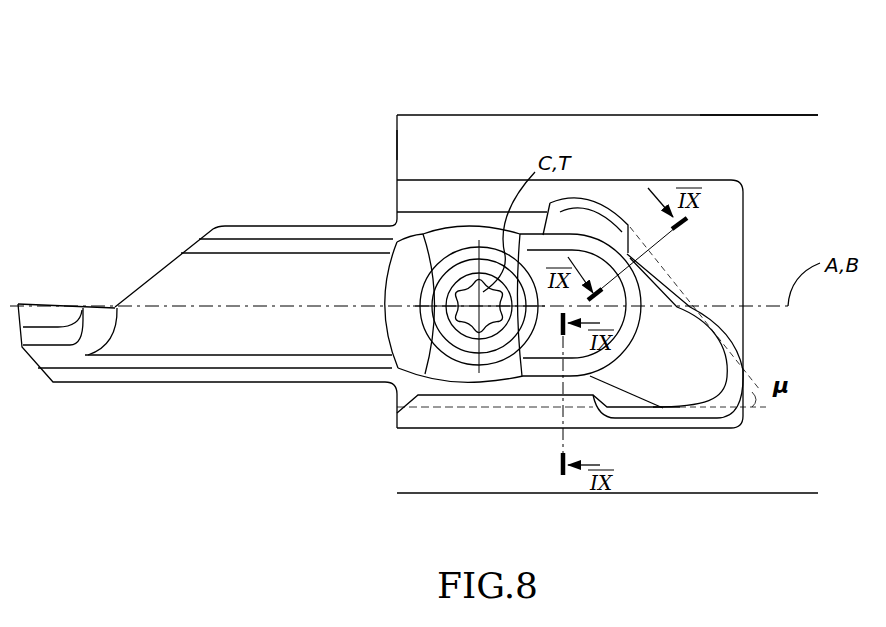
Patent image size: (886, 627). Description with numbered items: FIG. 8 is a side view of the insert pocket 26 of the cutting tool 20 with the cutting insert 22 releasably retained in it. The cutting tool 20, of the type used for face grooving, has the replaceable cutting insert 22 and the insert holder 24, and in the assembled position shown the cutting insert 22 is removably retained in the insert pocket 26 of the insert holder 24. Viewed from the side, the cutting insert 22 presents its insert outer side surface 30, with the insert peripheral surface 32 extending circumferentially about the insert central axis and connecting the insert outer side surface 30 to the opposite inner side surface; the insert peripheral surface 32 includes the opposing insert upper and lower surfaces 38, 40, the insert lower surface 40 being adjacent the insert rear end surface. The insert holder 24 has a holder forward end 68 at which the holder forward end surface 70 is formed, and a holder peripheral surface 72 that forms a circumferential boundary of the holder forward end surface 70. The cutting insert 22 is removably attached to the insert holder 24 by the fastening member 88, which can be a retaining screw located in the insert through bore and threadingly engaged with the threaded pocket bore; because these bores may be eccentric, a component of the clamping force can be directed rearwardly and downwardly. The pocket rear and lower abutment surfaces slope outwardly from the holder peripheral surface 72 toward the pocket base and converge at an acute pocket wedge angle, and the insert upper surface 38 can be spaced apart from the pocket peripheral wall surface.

The cutting tool 20 is at (120, 82).
The cutting insert 22 is at (100, 400).
The insert holder 24 is at (760, 103).
The insert pocket 26 is at (617, 170).
The insert outer side surface 30 is at (277, 334).
The insert peripheral surface 32 is at (258, 224).
The insert upper surface 38 is at (355, 236).
The insert lower surface 40 is at (352, 373).
The holder forward end 68 is at (468, 90).
The holder forward end surface 70 is at (397, 145).
The holder peripheral surface 72 is at (690, 130).
The fastening member 88 is at (455, 368).